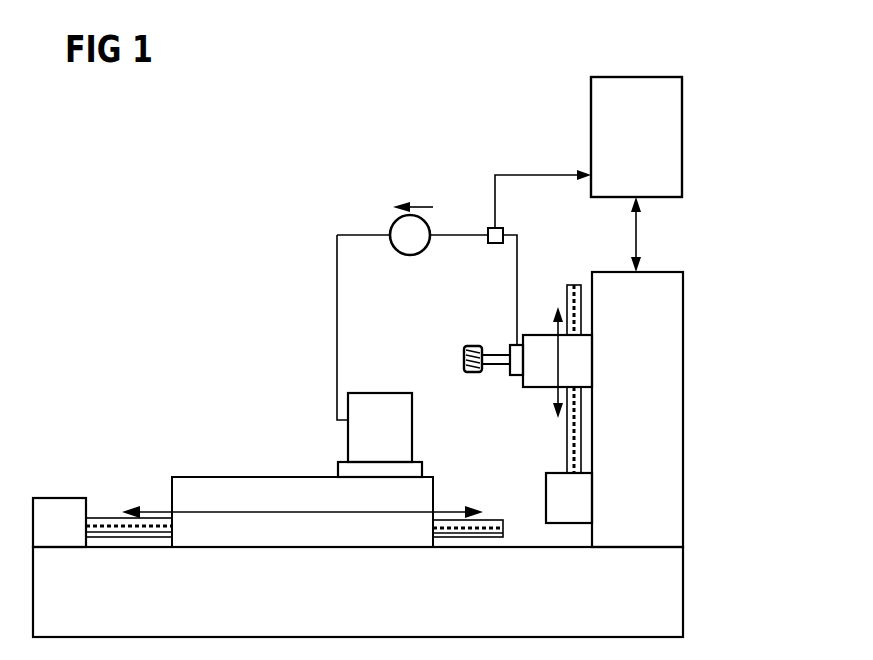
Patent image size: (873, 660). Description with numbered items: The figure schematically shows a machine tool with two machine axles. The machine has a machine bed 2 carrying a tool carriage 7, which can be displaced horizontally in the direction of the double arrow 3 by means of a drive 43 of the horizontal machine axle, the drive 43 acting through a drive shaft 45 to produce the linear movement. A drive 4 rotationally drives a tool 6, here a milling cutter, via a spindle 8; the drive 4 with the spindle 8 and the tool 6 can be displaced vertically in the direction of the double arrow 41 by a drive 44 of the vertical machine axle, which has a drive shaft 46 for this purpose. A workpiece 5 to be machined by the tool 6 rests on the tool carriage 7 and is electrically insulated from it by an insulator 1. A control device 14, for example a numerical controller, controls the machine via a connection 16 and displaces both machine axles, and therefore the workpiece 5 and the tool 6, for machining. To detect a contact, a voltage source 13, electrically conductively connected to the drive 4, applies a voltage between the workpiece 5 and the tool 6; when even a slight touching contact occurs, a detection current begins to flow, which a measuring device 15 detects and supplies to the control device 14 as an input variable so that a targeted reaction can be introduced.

The insulator 1 is at (424, 470).
The machine bed 2 is at (683, 590).
The double arrow (horizontal machine axle) 3 is at (147, 513).
The drive 4 is at (548, 388).
The workpiece 5 is at (347, 442).
The tool 6 is at (471, 346).
The tool carriage 7 is at (222, 477).
The spindle 8 is at (515, 378).
The voltage source 13 is at (392, 225).
The control device 14 is at (640, 77).
The measuring device 15 is at (504, 232).
The connection 16 is at (640, 242).
The double arrow (vertical machine axle) 41 is at (555, 332).
The drive of the horizontal machine axle 43 is at (65, 498).
The drive of the vertical machine axle 44 is at (573, 493).
The drive shaft 45 is at (115, 537).
The drive shaft 46 is at (577, 425).